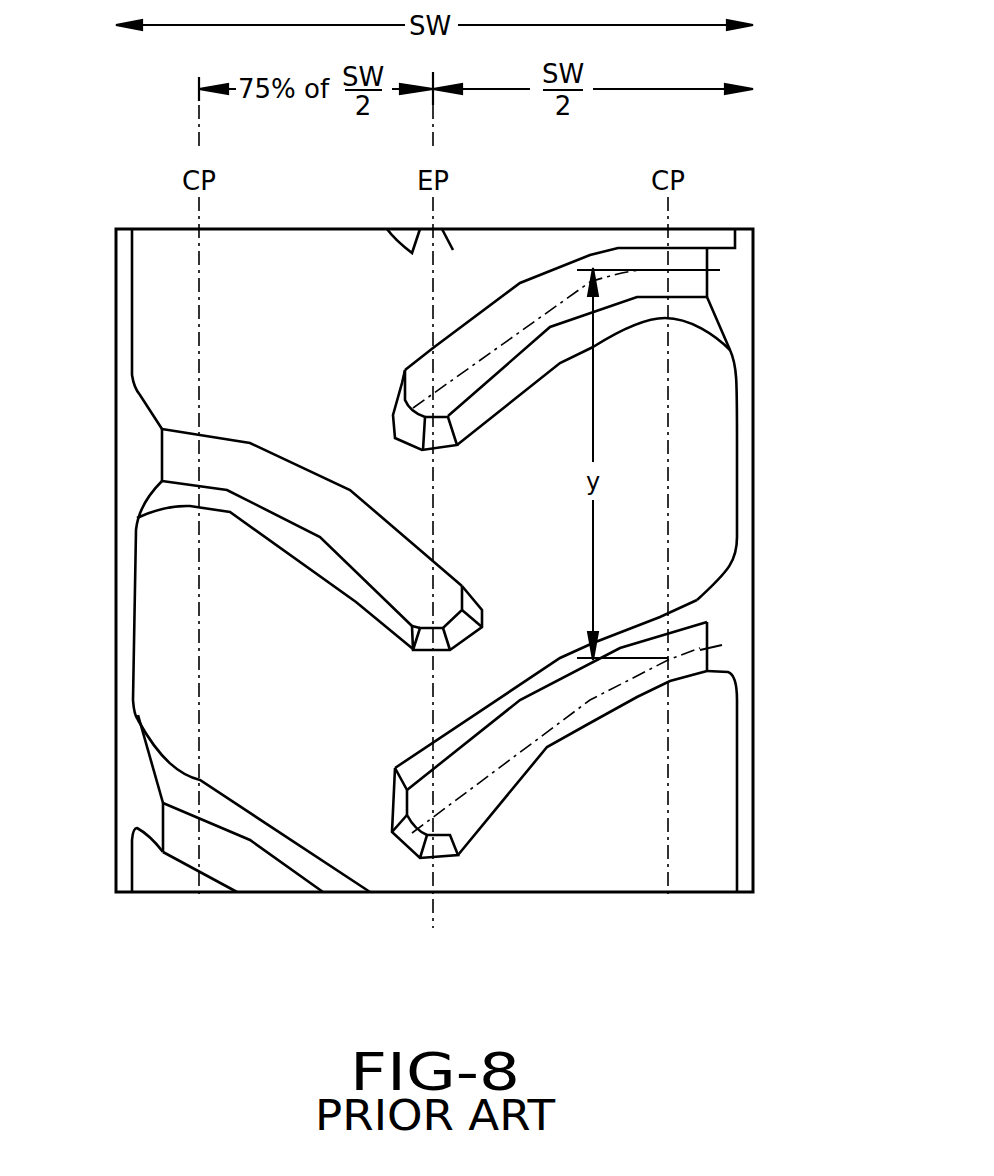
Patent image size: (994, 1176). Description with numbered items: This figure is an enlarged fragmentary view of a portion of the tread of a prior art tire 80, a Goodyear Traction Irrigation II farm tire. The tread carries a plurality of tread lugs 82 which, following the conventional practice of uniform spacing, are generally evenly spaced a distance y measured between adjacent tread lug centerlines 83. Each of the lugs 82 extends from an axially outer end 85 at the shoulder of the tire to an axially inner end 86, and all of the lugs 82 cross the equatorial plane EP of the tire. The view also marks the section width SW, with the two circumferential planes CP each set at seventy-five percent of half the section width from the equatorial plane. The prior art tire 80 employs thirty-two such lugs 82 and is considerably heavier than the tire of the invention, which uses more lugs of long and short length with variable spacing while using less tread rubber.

The prior art tire 80 is at (775, 457).
The tread lugs 82 is at (208, 437).
The tread lug centerlines 83 is at (695, 270).
The axially outer end 85 is at (145, 455).
The axially inner end 86 is at (472, 602).